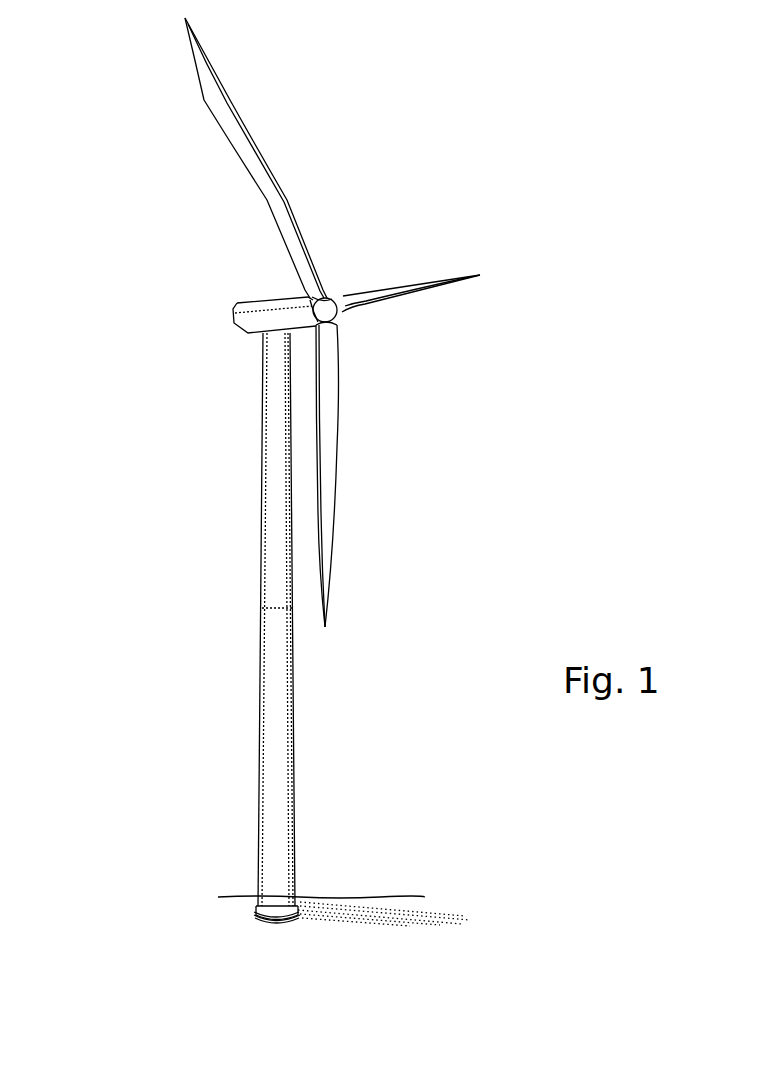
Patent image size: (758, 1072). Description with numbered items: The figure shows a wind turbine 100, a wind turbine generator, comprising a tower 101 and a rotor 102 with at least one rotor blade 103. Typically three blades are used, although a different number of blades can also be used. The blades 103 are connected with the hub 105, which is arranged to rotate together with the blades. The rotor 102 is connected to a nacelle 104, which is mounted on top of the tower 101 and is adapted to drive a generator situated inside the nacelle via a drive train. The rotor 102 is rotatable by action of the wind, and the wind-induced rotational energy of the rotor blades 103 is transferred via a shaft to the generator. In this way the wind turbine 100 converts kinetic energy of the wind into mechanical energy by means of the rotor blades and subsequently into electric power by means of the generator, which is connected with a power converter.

The wind turbine 100 is at (108, 106).
The tower 101 is at (255, 607).
The rotor 102 is at (317, 215).
The rotor blade 103 is at (245, 98).
The nacelle 104 is at (232, 327).
The hub 105 is at (343, 323).